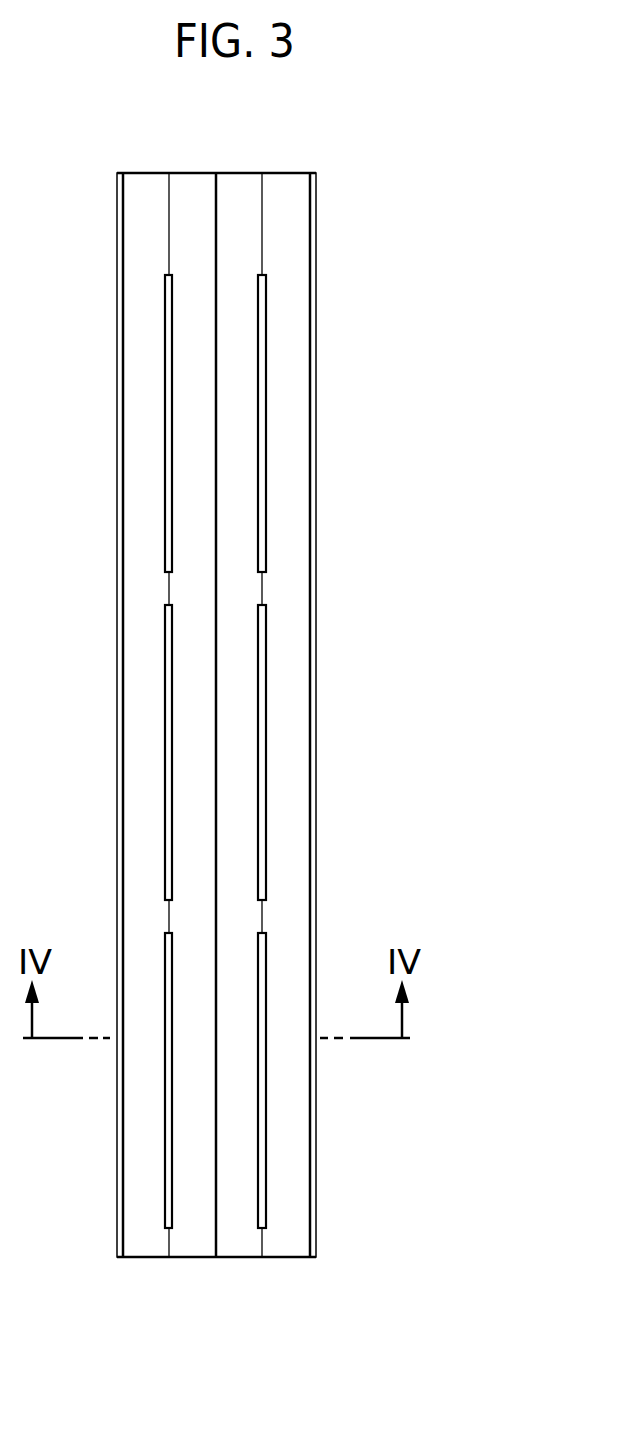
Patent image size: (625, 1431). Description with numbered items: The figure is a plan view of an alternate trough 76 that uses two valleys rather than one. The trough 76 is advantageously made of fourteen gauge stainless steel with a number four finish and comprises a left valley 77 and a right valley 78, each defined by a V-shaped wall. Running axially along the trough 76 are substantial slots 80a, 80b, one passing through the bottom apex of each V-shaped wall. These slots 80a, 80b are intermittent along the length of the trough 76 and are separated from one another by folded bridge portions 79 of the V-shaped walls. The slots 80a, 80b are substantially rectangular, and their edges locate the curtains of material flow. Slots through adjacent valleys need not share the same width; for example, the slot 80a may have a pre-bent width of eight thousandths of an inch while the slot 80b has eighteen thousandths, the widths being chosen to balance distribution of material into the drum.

The trough 76 is at (365, 127).
The left valley 77 is at (188, 179).
The right valley 78 is at (281, 179).
The folded bridge portions 79 is at (166, 585).
The slot 80a is at (168, 363).
The slot 80b is at (262, 363).